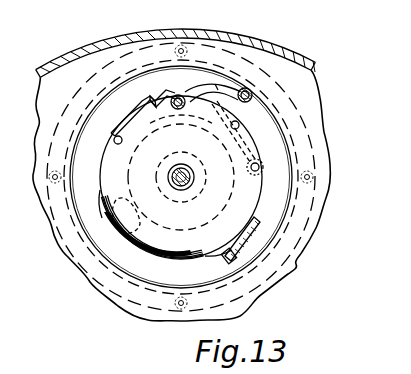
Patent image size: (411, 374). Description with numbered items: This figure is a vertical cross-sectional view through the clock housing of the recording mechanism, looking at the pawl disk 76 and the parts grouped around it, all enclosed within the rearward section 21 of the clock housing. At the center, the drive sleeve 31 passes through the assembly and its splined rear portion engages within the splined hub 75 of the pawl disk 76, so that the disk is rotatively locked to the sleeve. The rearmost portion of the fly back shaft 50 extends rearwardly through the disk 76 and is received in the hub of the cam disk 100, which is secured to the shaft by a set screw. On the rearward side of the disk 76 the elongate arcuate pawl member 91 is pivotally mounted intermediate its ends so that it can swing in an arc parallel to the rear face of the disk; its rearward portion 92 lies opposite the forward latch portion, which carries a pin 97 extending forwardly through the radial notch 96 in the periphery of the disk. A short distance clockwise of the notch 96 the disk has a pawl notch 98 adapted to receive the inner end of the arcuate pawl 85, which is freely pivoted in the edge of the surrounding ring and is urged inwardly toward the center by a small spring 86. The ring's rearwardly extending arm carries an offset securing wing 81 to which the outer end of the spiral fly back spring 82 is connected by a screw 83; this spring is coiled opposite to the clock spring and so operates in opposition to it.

The rearward section 21 is at (297, 266).
The drive sleeve 31 is at (195, 177).
The fly back shaft 50 is at (186, 186).
The splined hub 75 is at (186, 172).
The pawl disk 76 is at (243, 196).
The securing wing 81 is at (226, 261).
The fly back spring 82 is at (113, 242).
The screw 83 is at (228, 249).
The arcuate pawl 85 is at (212, 84).
The small spring 86 is at (237, 82).
The pawl member 91 is at (112, 114).
The rearward portion 92 is at (101, 198).
The radial notch 96 is at (158, 98).
The pin 97 is at (180, 93).
The pawl notch 98 is at (138, 100).
The cam disk 100 is at (103, 176).